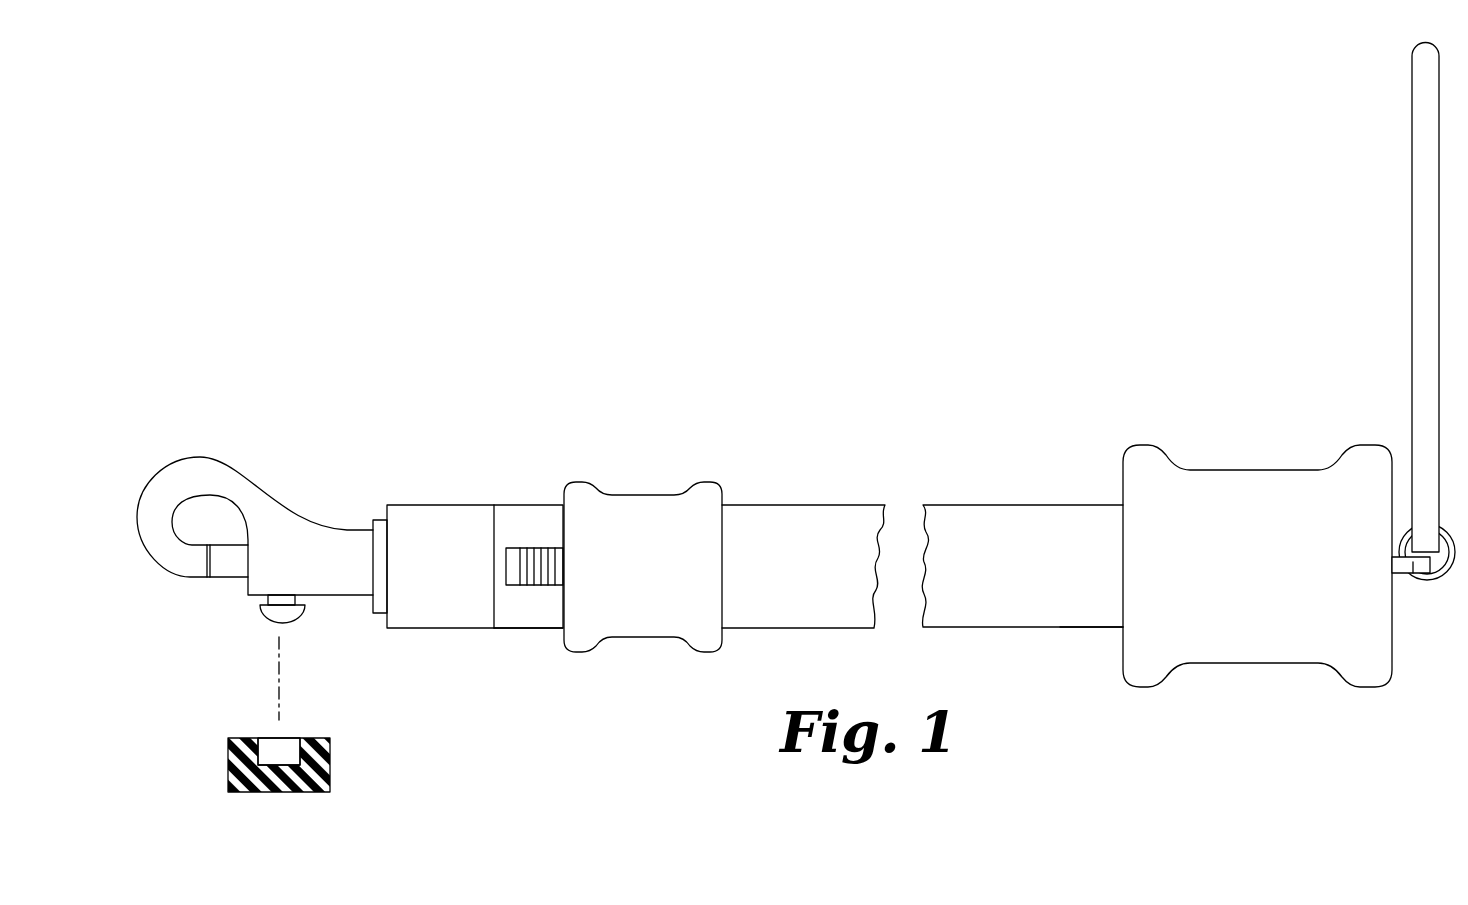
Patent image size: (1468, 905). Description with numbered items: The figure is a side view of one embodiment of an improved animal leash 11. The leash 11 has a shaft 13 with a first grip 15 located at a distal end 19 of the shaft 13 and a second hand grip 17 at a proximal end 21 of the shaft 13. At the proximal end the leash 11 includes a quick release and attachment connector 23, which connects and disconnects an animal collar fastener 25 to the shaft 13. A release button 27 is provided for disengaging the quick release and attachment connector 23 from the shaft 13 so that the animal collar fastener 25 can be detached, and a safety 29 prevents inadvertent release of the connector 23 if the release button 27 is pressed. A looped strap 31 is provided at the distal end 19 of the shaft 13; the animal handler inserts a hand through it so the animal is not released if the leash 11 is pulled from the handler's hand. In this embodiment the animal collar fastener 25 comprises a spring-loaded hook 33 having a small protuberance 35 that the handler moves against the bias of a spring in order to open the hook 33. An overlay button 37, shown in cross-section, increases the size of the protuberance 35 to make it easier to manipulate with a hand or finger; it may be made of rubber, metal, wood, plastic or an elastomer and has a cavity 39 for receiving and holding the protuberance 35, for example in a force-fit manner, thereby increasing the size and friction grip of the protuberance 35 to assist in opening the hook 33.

The improved animal leash 11 is at (1052, 724).
The shaft 13 is at (1046, 505).
The first grip 15 is at (1244, 497).
The second hand grip 17 is at (627, 526).
The distal end 19 is at (1121, 628).
The proximal end 21 is at (525, 630).
The quick release and attachment connector 23 is at (474, 466).
The animal collar fastener 25 is at (240, 436).
The release button 27 is at (1412, 581).
The safety 29 is at (526, 530).
The looped strap 31 is at (1423, 186).
The spring-loaded hook 33 is at (166, 550).
The protuberance 35 is at (266, 610).
The overlay button 37 is at (330, 765).
The cavity 39 is at (290, 756).